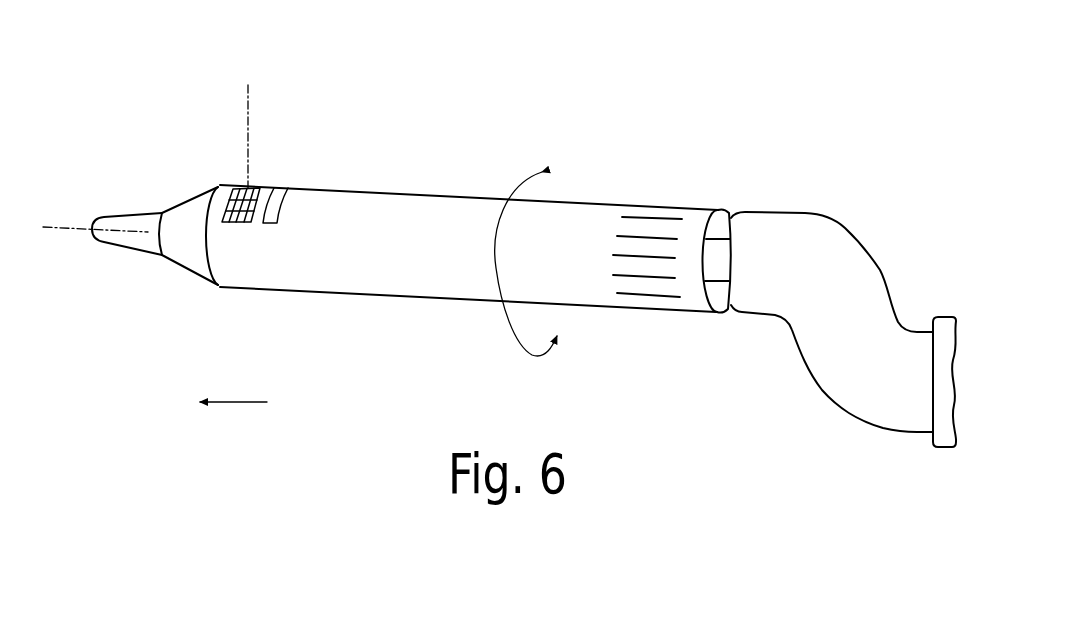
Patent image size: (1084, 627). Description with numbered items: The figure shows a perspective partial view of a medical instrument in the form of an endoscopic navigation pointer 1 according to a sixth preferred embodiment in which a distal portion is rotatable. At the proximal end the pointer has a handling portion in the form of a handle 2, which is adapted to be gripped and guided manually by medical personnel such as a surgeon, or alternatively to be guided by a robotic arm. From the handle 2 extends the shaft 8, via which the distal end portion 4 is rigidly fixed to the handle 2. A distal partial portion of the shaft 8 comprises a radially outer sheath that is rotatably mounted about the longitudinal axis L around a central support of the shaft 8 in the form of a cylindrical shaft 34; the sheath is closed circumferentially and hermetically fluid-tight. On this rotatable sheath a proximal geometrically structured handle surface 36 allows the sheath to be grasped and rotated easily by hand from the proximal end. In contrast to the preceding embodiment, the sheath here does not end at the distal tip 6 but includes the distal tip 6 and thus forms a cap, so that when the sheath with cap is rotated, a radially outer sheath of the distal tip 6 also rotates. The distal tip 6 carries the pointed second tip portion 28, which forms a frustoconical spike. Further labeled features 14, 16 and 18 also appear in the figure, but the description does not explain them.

The endoscopic navigation pointer 1 is at (143, 75).
The handle 2 is at (945, 447).
The distal end portion 4 is at (382, 118).
The distal tip 6 is at (151, 316).
The shaft 8 is at (672, 146).
The electrode grid 14 is at (247, 183).
The radial axis 16 is at (249, 85).
The slot 18 is at (287, 186).
The second tip portion 28 is at (132, 221).
The cylindrical shaft 34 is at (718, 251).
The handle surface 36 is at (637, 297).
The longitudinal axis L is at (82, 236).